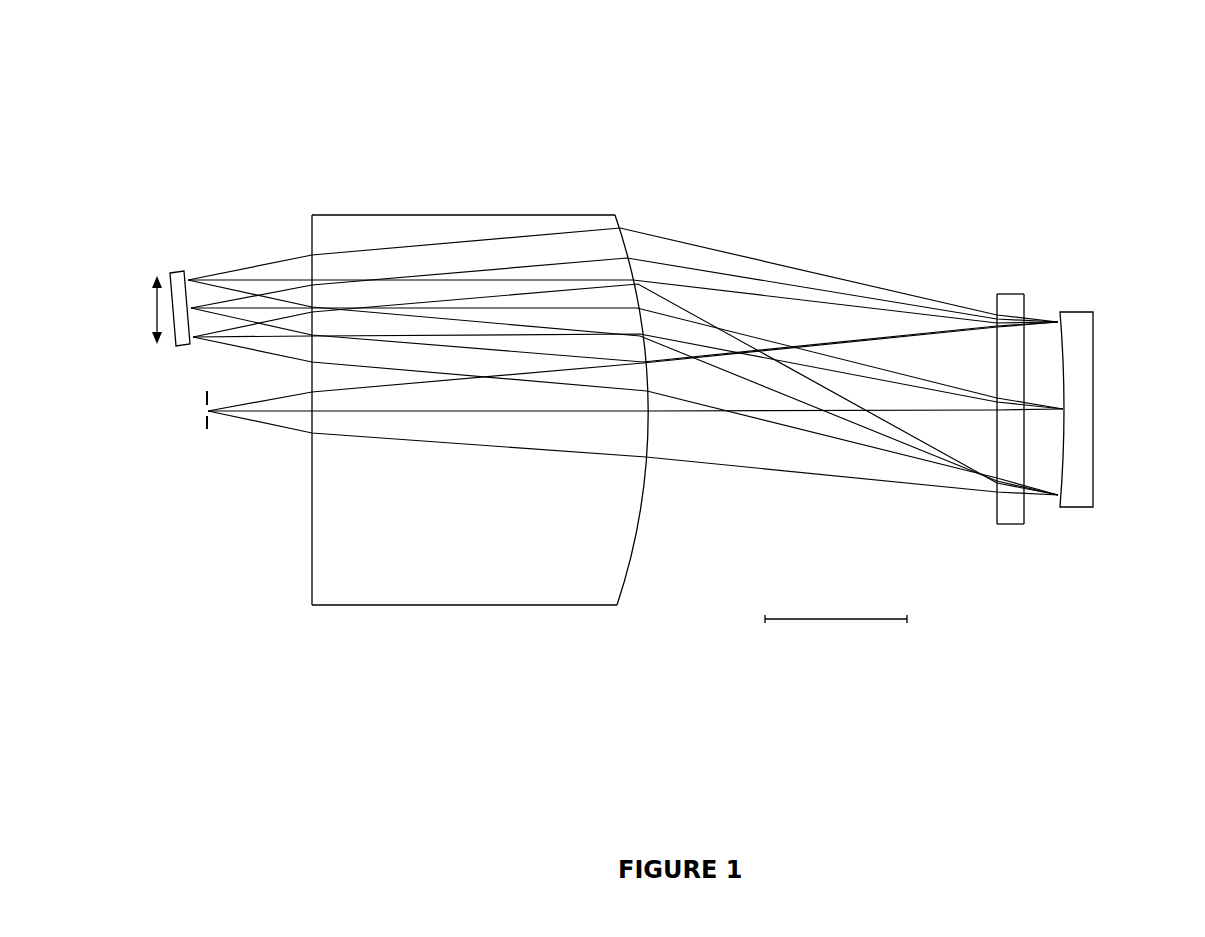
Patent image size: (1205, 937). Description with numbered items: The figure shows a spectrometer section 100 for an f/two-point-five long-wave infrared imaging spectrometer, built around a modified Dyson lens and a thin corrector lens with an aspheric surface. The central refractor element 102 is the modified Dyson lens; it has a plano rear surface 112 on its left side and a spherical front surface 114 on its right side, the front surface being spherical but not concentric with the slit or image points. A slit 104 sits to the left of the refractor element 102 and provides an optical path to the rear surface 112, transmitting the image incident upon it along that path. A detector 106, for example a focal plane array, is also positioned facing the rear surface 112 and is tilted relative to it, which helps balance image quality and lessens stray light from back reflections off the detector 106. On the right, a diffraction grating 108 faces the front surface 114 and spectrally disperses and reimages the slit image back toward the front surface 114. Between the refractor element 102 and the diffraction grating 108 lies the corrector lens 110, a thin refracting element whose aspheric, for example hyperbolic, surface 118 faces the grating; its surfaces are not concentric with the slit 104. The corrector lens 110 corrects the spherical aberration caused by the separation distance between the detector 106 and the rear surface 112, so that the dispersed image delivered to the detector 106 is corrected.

The spectrometer section 100 is at (377, 148).
The refractor element 102 is at (313, 215).
The slit 104 is at (207, 403).
The detector 106 is at (178, 270).
The diffraction grating 108 is at (1063, 453).
The corrector lens 110 is at (1005, 292).
The rear surface 112 is at (312, 582).
The front surface 114 is at (622, 575).
The aspheric surface 118 is at (1026, 296).